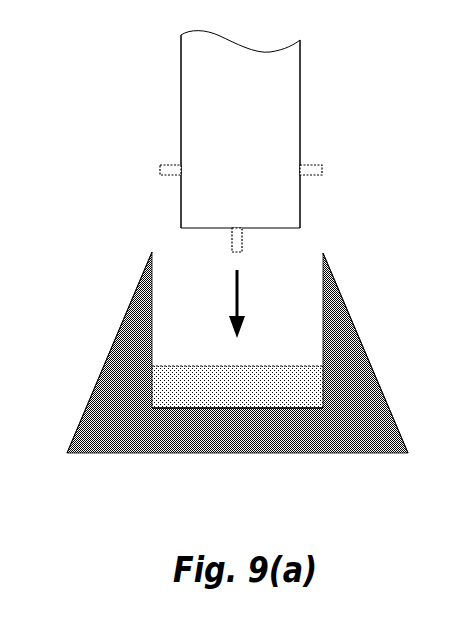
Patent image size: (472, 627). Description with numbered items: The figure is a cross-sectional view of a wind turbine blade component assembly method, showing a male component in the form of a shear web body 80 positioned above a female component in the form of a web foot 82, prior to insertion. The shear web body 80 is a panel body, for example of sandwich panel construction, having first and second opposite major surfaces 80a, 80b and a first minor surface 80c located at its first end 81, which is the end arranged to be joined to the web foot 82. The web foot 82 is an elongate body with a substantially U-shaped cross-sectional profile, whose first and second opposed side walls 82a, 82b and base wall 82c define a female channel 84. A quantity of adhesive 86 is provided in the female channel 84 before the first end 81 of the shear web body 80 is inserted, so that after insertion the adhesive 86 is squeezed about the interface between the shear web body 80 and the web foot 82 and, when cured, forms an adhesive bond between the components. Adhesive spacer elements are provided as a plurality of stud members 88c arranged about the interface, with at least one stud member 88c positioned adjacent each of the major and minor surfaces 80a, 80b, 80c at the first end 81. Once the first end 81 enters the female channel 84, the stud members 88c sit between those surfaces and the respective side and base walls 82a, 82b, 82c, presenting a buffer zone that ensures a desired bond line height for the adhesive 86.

The shear web body 80 is at (248, 122).
The first major surface 80a is at (180, 125).
The second major surface 80b is at (300, 154).
The first minor surface 80c is at (213, 227).
The stud members 88c is at (160, 168).
The first end 81 is at (126, 243).
The web foot 82 is at (360, 427).
The first side wall 82a is at (138, 326).
The second side wall 82b is at (325, 318).
The base wall 82c is at (178, 410).
The female channel 84 is at (297, 334).
The adhesive 86 is at (255, 393).